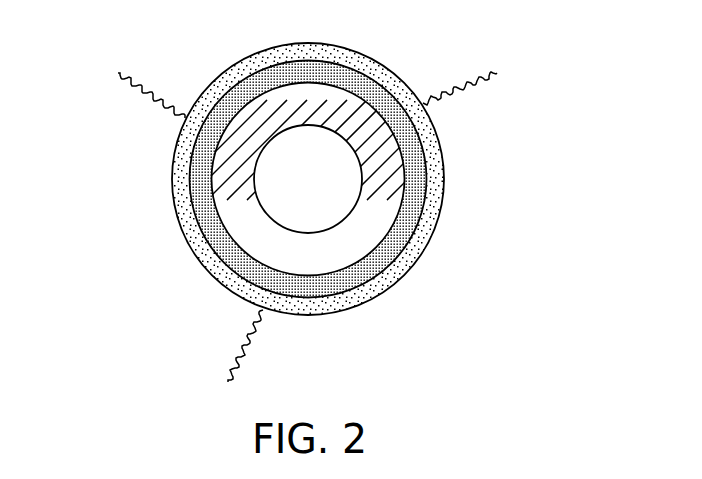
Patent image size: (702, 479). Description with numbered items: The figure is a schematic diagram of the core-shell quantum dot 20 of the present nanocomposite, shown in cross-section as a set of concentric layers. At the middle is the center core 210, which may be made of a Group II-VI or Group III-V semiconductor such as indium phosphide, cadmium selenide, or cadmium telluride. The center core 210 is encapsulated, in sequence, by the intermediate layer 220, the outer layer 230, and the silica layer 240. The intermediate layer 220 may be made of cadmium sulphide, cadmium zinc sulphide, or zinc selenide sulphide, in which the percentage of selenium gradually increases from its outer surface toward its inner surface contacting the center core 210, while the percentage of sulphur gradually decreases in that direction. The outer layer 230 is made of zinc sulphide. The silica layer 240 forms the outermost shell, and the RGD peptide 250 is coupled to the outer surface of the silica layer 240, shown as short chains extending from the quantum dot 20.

The core-shell quantum dot 20 is at (78, 68).
The center core 210 is at (310, 198).
The intermediate layer 220 is at (343, 250).
The outer layer 230 is at (415, 221).
The silica layer 240 is at (433, 181).
The RGD peptide 250 is at (498, 78).